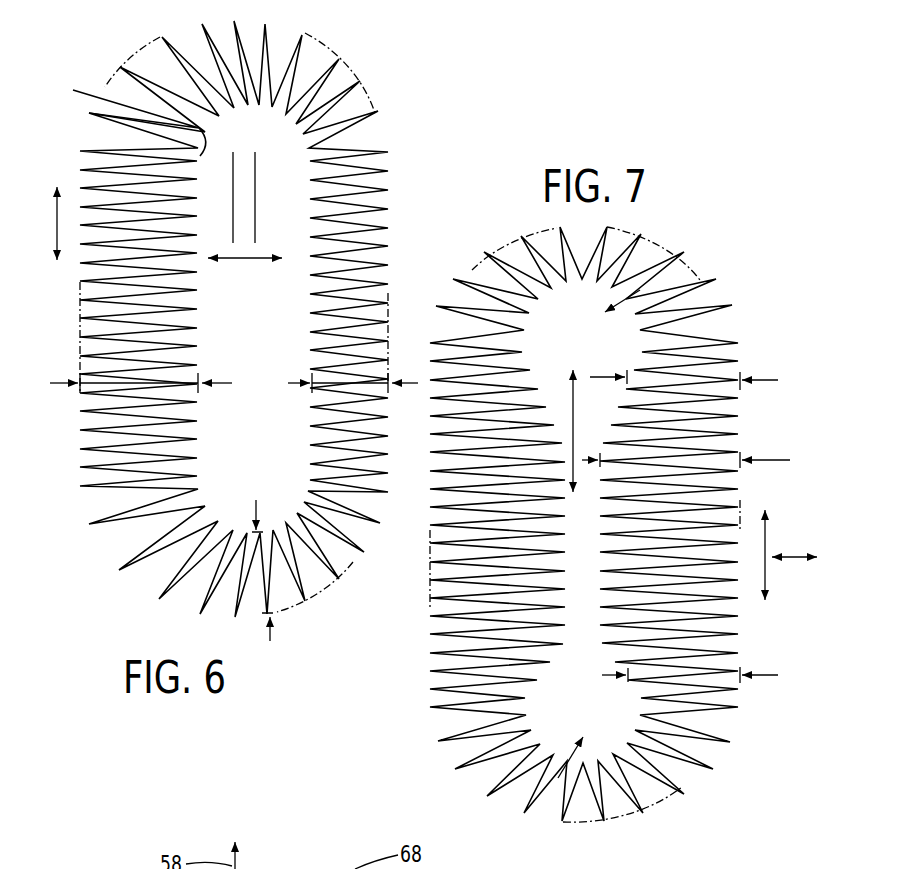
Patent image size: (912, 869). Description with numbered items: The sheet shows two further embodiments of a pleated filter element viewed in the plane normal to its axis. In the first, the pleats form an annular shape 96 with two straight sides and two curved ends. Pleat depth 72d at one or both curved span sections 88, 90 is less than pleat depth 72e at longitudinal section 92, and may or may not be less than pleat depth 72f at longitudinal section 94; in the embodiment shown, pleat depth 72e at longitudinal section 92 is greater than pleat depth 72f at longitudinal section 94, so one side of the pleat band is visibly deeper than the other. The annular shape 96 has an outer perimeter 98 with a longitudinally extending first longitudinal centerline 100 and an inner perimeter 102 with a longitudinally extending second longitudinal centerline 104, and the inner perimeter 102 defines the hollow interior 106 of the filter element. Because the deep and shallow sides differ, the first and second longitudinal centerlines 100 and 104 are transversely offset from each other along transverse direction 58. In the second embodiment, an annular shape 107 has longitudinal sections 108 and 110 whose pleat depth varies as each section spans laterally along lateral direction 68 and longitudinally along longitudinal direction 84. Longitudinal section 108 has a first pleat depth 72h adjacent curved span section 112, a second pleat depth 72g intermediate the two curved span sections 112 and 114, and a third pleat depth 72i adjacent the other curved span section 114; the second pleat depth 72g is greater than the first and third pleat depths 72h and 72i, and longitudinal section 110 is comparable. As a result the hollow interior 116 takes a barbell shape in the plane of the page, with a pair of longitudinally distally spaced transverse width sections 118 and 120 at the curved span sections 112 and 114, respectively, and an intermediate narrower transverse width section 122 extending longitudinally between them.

In FIG. 6, the transverse direction 58 is at (245, 263).
In FIG. 7, the transverse direction 58 is at (795, 560).
In FIG. 6, the lateral direction 68 is at (55, 217).
In FIG. 7, the lateral direction 68 is at (766, 548).
In FIG. 6, the pleat depth 72d is at (270, 637).
In FIG. 6, the pleat depth 72e is at (228, 385).
In FIG. 6, the pleat depth 72f is at (293, 385).
In FIG. 7, the second pleat depth 72g is at (762, 460).
In FIG. 7, the first pleat depth 72h is at (760, 380).
In FIG. 7, the third pleat depth 72i is at (742, 675).
In FIG. 7, the longitudinal direction 84 is at (573, 415).
In FIG. 6, the curved span section 88 is at (327, 587).
In FIG. 6, the curved span section 90 is at (320, 45).
In FIG. 6, the longitudinal section 92 is at (80, 327).
In FIG. 6, the longitudinal section 94 is at (388, 315).
In FIG. 6, the annular shape 96 is at (364, 70).
In FIG. 6, the outer perimeter 98 is at (137, 50).
In FIG. 6, the first longitudinal centerline 100 is at (233, 197).
In FIG. 6, the inner perimeter 102 is at (73, 90).
In FIG. 6, the second longitudinal centerline 104 is at (255, 190).
In FIG. 6, the hollow interior 106 is at (270, 348).
In FIG. 7, the annular shape 107 is at (512, 236).
In FIG. 7, the longitudinal section 108 is at (740, 497).
In FIG. 7, the longitudinal section 110 is at (426, 600).
In FIG. 7, the curved span section 112 is at (663, 247).
In FIG. 7, the curved span section 114 is at (650, 810).
In FIG. 7, the hollow interior 116 is at (592, 711).
In FIG. 7, the transverse width section 118 is at (692, 275).
In FIG. 7, the transverse width section 120 is at (545, 790).
In FIG. 7, the narrower transverse width section 122 is at (585, 557).